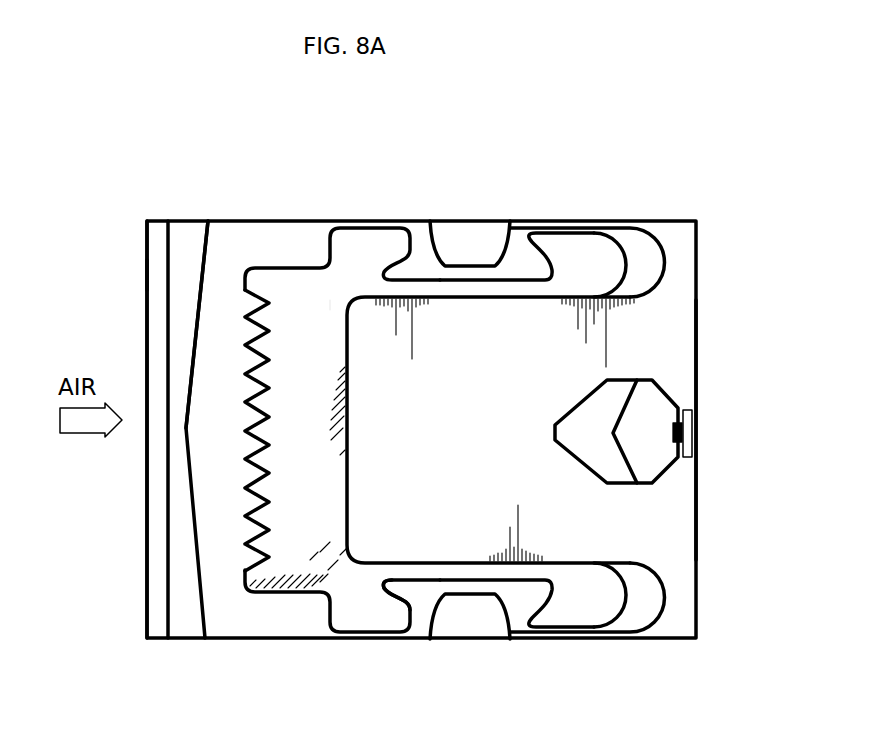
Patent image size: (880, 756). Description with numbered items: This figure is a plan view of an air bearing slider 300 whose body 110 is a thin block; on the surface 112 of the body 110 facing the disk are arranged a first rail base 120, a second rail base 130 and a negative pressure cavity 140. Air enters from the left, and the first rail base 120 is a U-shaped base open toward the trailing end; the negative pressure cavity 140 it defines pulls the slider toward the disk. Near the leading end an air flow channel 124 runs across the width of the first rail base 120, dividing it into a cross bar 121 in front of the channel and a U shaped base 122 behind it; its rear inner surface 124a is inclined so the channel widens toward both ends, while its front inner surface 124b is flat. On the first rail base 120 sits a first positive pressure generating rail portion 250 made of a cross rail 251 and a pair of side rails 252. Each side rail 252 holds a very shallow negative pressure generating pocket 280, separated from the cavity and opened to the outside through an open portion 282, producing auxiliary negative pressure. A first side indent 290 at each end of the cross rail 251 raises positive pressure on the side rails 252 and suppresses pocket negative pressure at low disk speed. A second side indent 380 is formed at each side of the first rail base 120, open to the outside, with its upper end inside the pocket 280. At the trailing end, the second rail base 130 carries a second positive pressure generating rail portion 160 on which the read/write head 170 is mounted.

The body 110 is at (698, 285).
The surface of the body facing the disk 112 is at (677, 340).
The first rail base 120 is at (147, 451).
The cross bar 121 is at (156, 625).
The U shaped base 122 is at (225, 625).
The air flow channel 124 is at (183, 230).
The rear inner surface of the air flow channel 124a is at (207, 235).
The front inner surface of the air flow channel 124b is at (180, 272).
The second rail base 130 is at (602, 472).
The negative pressure cavity 140 is at (485, 452).
The second positive pressure generating rail portion 160 is at (642, 410).
The read/write head 170 is at (687, 433).
The first positive pressure generating rail portion 250 is at (488, 393).
The cross rail 251 is at (312, 330).
The side rails 252 is at (603, 263).
The negative pressure generating pocket 280 is at (533, 267).
The open portion 282 is at (410, 620).
The first side indent 290 is at (320, 250).
The air bearing slider 300 is at (300, 204).
The second side indent 380 is at (463, 258).